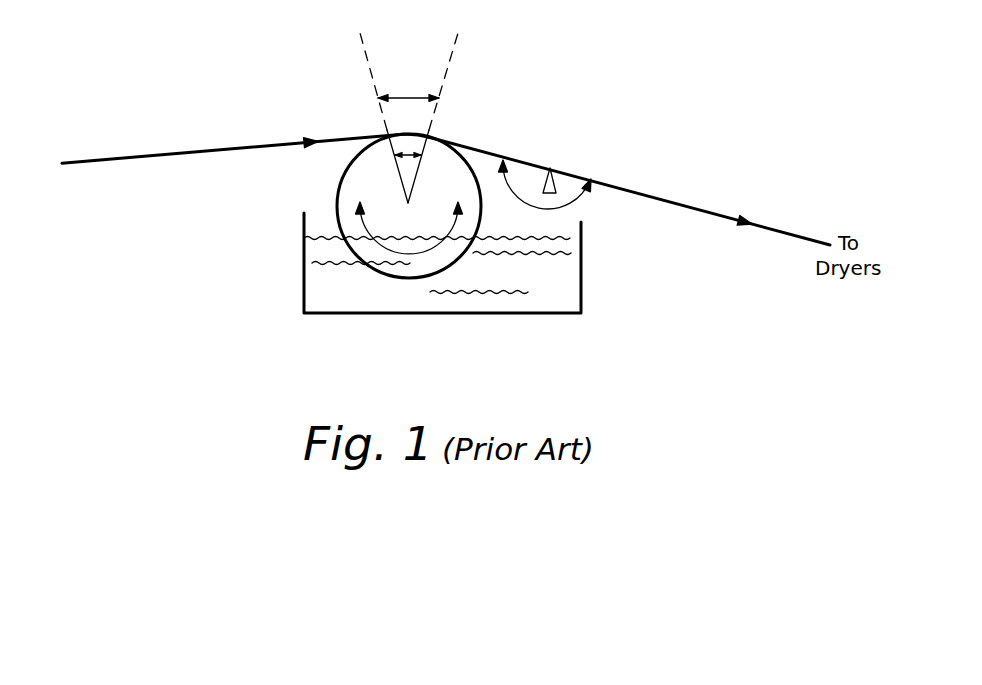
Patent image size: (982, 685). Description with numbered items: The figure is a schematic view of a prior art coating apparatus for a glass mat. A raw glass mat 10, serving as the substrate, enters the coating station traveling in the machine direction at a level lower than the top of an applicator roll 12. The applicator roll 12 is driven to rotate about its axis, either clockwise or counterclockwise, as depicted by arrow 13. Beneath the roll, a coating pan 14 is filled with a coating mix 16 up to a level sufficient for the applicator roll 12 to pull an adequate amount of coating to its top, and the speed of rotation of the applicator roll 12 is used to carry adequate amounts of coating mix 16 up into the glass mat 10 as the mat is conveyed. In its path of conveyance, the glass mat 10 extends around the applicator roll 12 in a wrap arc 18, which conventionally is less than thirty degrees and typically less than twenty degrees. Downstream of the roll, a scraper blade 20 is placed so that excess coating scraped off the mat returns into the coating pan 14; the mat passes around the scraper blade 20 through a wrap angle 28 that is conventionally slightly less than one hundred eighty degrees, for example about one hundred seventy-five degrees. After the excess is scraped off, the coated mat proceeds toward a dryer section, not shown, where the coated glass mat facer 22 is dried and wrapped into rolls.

The raw glass mat 10 is at (214, 151).
The applicator roll 12 is at (334, 182).
The arrow 13 is at (423, 252).
The coating pan 14 is at (528, 313).
The coating mix 16 is at (553, 270).
The wrap arc 18 is at (413, 91).
The scraper blade 20 is at (557, 185).
The coated glass mat facer 22 is at (651, 196).
The wrap angle 28 is at (542, 207).